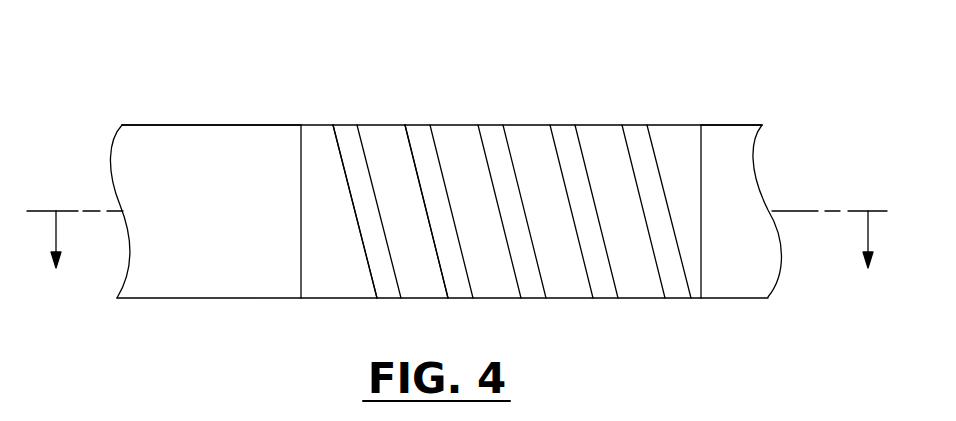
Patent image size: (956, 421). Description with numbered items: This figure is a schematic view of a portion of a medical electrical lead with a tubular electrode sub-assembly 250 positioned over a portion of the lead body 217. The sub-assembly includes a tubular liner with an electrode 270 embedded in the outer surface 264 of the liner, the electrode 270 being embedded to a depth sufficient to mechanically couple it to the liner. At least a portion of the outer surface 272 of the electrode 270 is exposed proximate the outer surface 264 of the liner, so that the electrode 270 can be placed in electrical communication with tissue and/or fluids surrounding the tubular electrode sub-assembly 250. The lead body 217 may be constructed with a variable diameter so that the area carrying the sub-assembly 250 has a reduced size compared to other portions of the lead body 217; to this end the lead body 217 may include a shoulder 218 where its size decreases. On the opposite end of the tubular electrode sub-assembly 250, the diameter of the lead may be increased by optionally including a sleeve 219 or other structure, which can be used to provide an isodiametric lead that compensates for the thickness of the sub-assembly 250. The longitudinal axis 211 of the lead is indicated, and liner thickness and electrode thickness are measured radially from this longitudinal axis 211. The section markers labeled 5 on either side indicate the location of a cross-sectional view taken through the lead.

The tubular electrode sub-assembly 250 is at (553, 70).
The lead body 217 is at (180, 125).
The shoulder 218 is at (303, 155).
The electrode 270 is at (344, 138).
The outer surface of the electrode 272 is at (418, 123).
The outer surface of the tubular liner 264 is at (465, 124).
The sleeve 219 is at (723, 283).
The longitudinal axis 211 is at (800, 211).
The section line 5- 5 is at (457, 252).